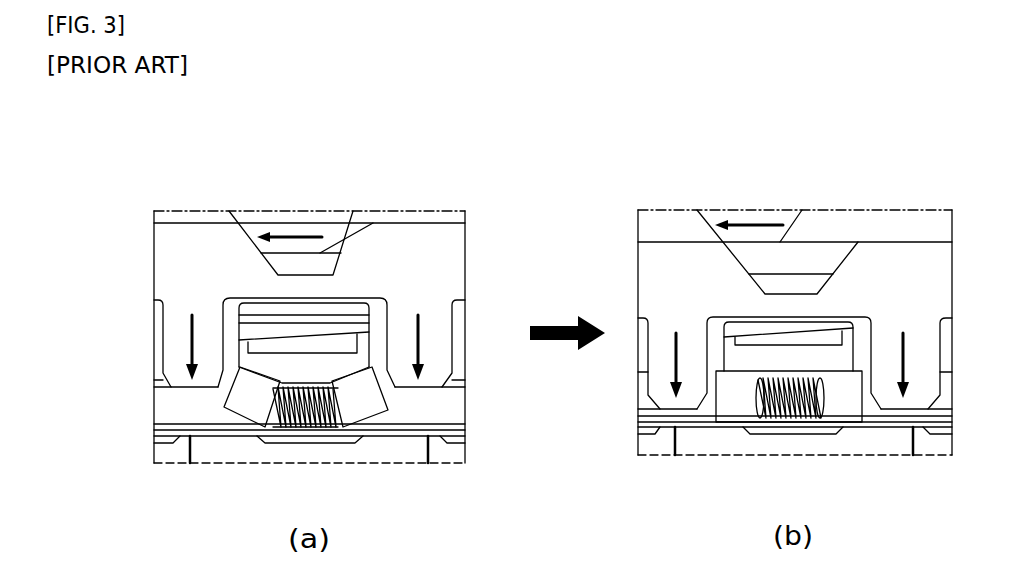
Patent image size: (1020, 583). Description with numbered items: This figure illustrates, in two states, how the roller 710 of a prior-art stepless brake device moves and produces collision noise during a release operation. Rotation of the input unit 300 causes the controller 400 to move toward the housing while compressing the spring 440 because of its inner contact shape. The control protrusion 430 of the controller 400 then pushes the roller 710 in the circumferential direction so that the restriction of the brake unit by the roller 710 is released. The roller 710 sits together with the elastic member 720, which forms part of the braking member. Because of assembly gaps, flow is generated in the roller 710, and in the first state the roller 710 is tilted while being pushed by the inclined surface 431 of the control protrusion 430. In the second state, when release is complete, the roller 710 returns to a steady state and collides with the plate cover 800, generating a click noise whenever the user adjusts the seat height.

The input unit 300 is at (313, 221).
The controller 400 is at (183, 258).
The control protrusion 430 is at (177, 340).
The inclined surface 431 is at (223, 387).
The spring 440 is at (340, 345).
The roller 710 is at (243, 405).
The elastic member 720 is at (288, 423).
The plate cover 800 is at (167, 437).